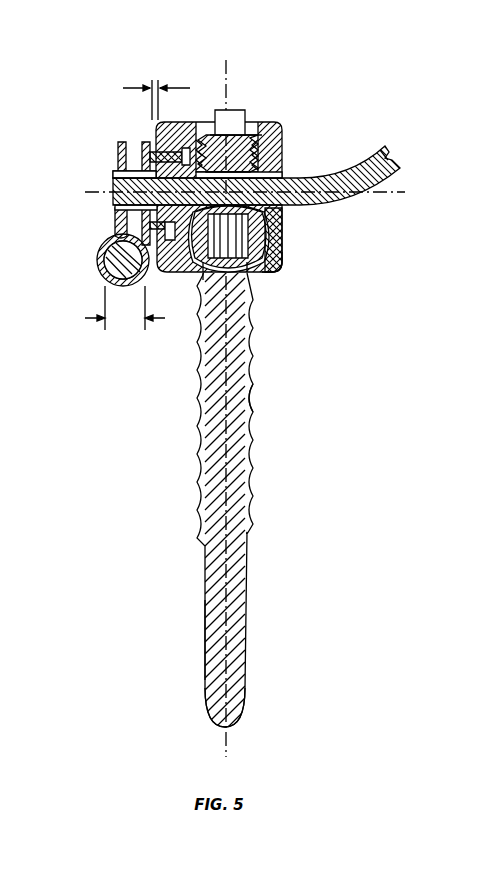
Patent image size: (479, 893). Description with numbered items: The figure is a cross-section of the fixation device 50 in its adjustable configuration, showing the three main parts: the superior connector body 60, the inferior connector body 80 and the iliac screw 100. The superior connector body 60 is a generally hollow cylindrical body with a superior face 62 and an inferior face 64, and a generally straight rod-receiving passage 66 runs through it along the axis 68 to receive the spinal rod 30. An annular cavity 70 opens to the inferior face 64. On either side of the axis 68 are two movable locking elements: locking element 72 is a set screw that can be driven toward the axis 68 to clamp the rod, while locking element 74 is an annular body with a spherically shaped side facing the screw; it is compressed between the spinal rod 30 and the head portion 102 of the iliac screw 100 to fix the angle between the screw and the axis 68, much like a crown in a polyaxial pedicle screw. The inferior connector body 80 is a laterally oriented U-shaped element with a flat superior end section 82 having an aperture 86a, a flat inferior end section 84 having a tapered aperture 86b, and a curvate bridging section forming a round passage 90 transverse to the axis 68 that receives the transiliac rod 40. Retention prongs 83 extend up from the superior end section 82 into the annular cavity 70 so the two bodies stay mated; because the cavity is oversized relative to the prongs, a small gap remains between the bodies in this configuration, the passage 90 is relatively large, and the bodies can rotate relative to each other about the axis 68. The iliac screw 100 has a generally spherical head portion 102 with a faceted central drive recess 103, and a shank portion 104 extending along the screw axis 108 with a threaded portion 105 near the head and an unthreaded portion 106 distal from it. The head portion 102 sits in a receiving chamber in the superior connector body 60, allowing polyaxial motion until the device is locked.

The spinal rod 30 is at (345, 197).
The transiliac rod 40 is at (104, 262).
The fixation device 50 is at (312, 52).
The superior connector body 60 is at (318, 108).
The superior face 62 is at (284, 150).
The inferior face 64 is at (152, 143).
The rod-receiving passage 66 is at (268, 174).
The axis 68 is at (390, 190).
The annular cavity 70 is at (183, 262).
The locking element 72 is at (252, 107).
The locking element 74 is at (283, 214).
The inferior connector body 80 is at (125, 80).
The superior end section 82 is at (143, 150).
The retention prongs 83 is at (175, 245).
The inferior end section 84 is at (118, 148).
The aperture 86a is at (115, 172).
The aperture 86b is at (115, 215).
The passage 90 is at (102, 243).
The iliac screw 100 is at (194, 468).
The head portion 102 is at (283, 232).
The central drive recess 103 is at (276, 264).
The shank portion 104 is at (270, 522).
The threaded portion 105 is at (253, 383).
The unthreaded portion 106 is at (232, 618).
The screw axis 108 is at (228, 752).